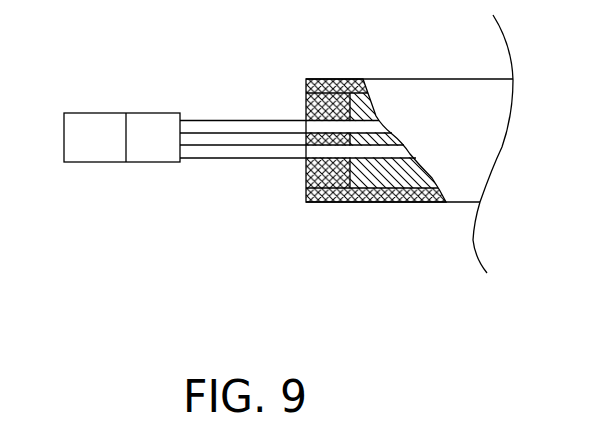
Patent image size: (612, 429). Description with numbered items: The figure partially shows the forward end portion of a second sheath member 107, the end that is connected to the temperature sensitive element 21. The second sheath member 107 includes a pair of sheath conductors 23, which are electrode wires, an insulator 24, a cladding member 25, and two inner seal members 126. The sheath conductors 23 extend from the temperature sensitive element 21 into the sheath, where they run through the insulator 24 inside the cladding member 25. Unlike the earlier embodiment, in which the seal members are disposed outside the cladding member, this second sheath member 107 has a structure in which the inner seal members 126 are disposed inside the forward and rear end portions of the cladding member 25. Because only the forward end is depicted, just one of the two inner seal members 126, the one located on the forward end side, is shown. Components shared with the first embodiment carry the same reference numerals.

The temperature sensitive element 21 is at (99, 149).
The sheath conductors 23 is at (298, 207).
The insulator 24 is at (380, 173).
The cladding member 25 is at (343, 90).
The second sheath member 107 is at (320, 174).
The inner seal member 126 is at (320, 182).